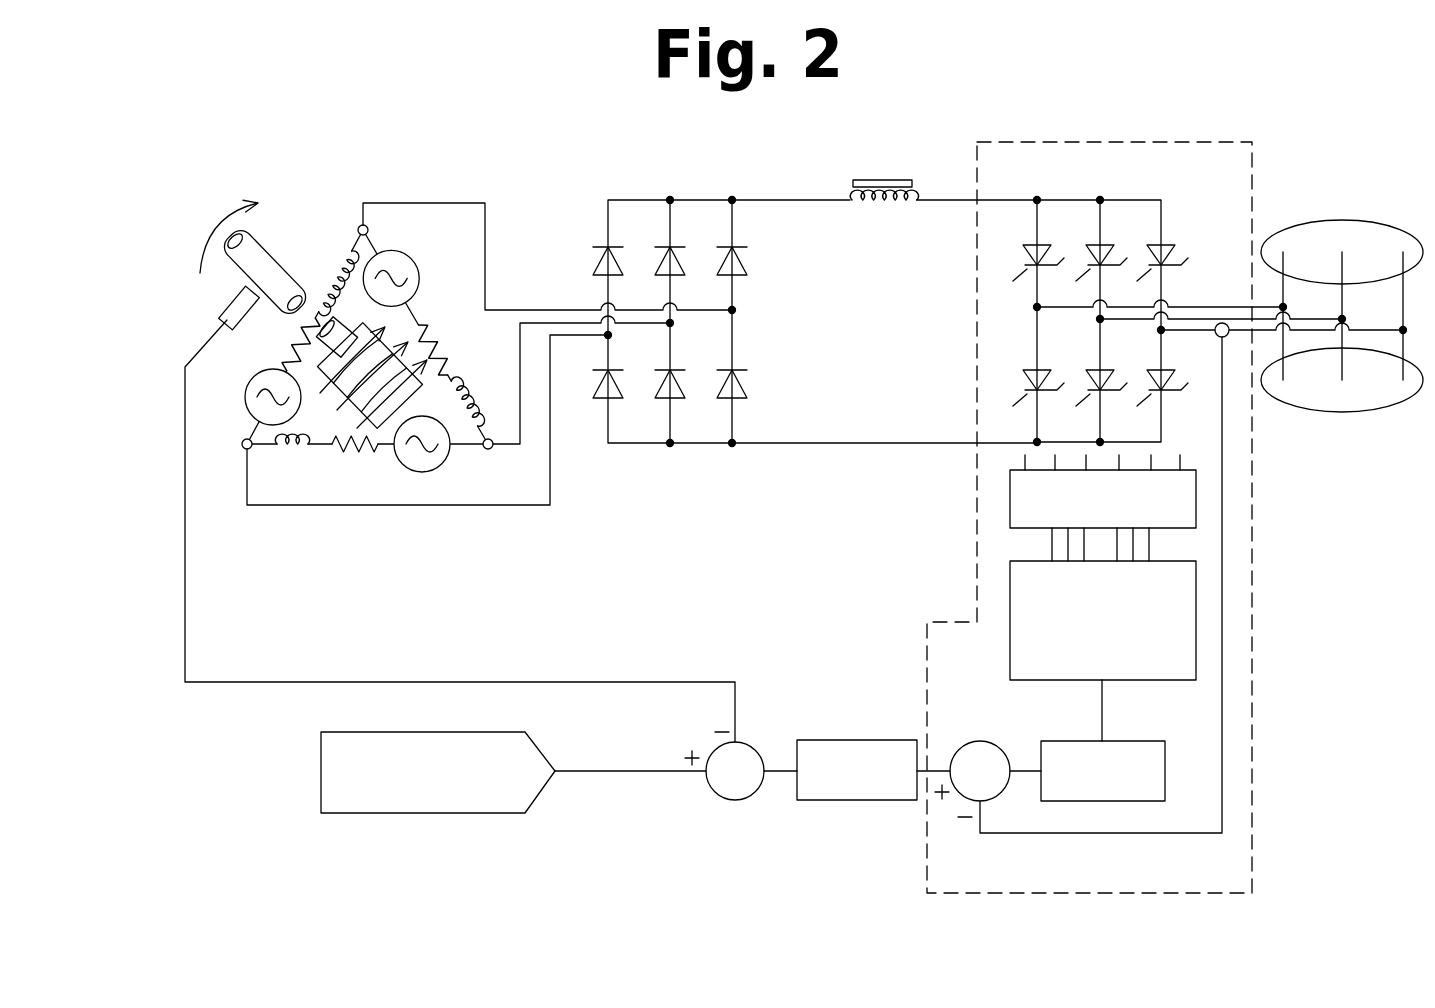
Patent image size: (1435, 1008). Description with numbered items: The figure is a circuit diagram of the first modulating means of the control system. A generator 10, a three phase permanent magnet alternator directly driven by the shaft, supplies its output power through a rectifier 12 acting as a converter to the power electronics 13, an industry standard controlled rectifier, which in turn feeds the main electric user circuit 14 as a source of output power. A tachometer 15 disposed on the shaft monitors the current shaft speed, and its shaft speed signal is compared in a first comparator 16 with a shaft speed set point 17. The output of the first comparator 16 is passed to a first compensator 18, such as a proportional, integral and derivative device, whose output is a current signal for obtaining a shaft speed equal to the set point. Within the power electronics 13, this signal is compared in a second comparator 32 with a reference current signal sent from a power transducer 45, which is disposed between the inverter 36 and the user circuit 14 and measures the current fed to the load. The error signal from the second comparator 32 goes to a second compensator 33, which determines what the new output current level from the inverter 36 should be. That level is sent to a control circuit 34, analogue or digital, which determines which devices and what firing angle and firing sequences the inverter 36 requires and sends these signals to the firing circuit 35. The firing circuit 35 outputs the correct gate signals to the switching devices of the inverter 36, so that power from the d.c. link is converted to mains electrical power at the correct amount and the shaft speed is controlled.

The generator 10 is at (345, 238).
The rectifier 12 is at (683, 190).
The power electronics 13 is at (1120, 481).
The user circuit 14 is at (1350, 217).
The tachometer 15 is at (223, 307).
The first comparator 16 is at (732, 800).
The shaft speed set point 17 is at (443, 813).
The first compensator 18 is at (836, 788).
The second comparator 32 is at (961, 792).
The second compensator 33 is at (1082, 789).
The control circuit 34 is at (1082, 637).
The firing circuit 35 is at (1082, 519).
The inverter 36 is at (1175, 217).
The power transducer 45 is at (1228, 337).